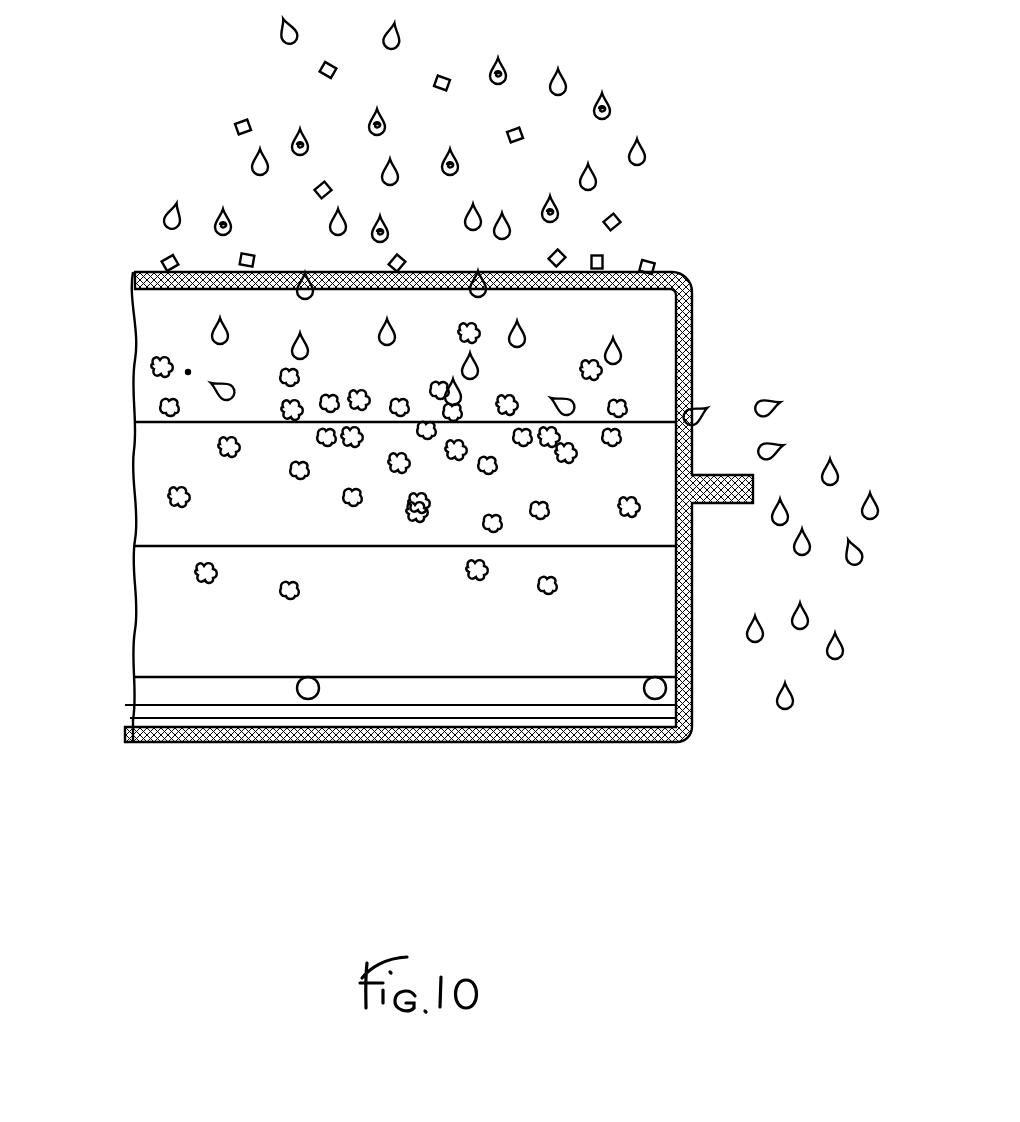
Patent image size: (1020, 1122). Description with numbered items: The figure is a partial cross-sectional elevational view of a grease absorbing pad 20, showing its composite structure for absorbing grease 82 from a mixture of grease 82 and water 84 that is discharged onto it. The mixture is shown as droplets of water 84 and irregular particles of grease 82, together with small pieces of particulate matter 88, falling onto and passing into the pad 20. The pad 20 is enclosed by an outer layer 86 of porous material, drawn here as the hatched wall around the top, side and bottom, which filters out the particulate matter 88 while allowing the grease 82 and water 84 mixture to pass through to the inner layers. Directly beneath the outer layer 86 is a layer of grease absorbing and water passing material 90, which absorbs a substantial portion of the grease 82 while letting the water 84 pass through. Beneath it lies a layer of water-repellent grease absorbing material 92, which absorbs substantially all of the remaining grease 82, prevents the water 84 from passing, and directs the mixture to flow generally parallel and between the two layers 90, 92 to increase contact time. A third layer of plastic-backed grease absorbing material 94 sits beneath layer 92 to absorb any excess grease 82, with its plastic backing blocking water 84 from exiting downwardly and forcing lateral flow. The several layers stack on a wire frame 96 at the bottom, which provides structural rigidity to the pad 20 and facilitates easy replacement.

The grease absorbing pad 20 is at (512, 768).
The grease 82 is at (225, 447).
The water 84 is at (755, 618).
The outer layer 86 is at (684, 280).
The particulate matter 88 is at (710, 255).
The layer of grease absorbing and water passing material 90 is at (142, 298).
The layer of water-repellent grease absorbing material 92 is at (156, 528).
The layer of plastic-backed grease absorbing material 94 is at (158, 637).
The wire frame 96 is at (720, 746).